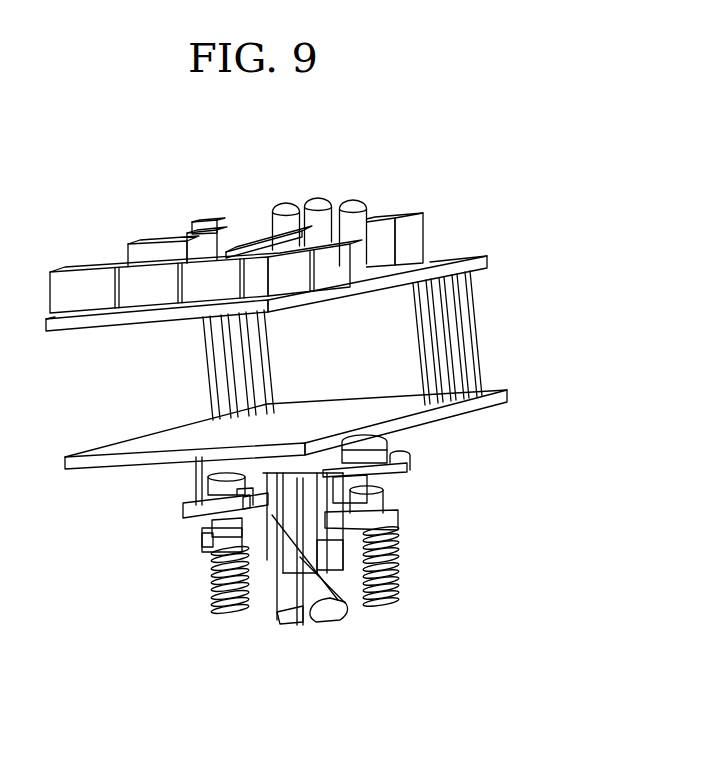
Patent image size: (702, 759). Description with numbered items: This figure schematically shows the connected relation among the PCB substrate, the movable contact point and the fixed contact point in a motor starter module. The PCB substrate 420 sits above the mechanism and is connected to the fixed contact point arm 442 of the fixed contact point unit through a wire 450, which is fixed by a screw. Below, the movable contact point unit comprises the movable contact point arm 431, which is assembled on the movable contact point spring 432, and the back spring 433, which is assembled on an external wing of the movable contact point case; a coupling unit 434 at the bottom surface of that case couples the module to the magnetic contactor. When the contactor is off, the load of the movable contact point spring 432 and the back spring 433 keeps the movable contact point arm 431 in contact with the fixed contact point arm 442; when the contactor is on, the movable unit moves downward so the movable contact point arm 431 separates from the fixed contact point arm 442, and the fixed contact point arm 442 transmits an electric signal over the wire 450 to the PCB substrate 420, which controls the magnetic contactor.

The PCB substrate 420 is at (487, 253).
The wire 450 is at (202, 470).
The fixed contact point arm 442 is at (185, 515).
The movable contact point spring 432 is at (395, 508).
The back spring 433 is at (213, 590).
The coupling unit 434 is at (297, 624).
The movable contact point arm 431 is at (350, 610).